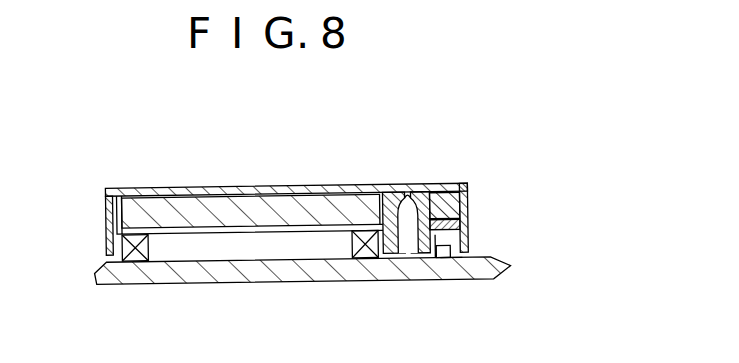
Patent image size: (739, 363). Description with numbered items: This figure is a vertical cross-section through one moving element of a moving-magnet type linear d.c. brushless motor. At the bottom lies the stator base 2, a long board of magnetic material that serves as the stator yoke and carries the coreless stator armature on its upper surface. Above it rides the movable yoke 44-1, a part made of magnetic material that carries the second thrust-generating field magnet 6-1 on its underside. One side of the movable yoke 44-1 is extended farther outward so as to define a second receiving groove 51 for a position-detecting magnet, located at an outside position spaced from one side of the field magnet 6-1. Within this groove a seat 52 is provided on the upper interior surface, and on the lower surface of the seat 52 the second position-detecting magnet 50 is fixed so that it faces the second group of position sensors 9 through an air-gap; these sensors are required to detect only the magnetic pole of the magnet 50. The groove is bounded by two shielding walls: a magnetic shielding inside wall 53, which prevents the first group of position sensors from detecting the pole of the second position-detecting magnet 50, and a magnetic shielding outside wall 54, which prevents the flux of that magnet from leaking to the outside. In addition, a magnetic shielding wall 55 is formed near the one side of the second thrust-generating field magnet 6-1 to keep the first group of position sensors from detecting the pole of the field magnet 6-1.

The movable yoke 44-1 is at (167, 185).
The second thrust-generating field magnet 6-1 is at (285, 192).
The magnetic shielding wall 55 is at (402, 186).
The magnetic shielding inside wall 53 is at (415, 186).
The seat 52 is at (455, 186).
The second position-detecting magnet 50 is at (467, 227).
The magnetic shielding outside wall 54 is at (468, 212).
The second receiving groove 51 is at (437, 240).
The position sensors 9 is at (452, 258).
The stator base 2 is at (293, 282).